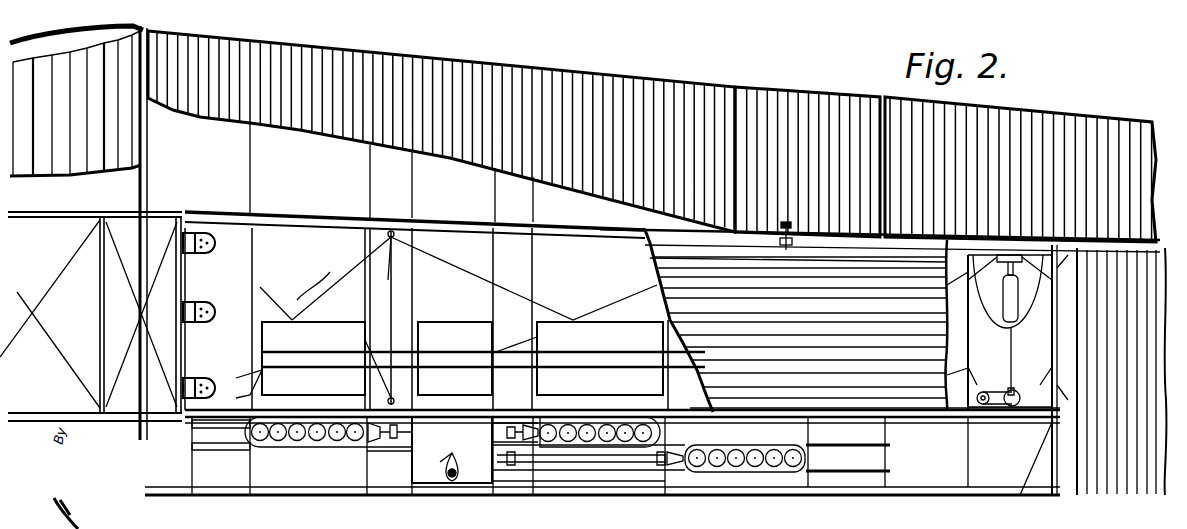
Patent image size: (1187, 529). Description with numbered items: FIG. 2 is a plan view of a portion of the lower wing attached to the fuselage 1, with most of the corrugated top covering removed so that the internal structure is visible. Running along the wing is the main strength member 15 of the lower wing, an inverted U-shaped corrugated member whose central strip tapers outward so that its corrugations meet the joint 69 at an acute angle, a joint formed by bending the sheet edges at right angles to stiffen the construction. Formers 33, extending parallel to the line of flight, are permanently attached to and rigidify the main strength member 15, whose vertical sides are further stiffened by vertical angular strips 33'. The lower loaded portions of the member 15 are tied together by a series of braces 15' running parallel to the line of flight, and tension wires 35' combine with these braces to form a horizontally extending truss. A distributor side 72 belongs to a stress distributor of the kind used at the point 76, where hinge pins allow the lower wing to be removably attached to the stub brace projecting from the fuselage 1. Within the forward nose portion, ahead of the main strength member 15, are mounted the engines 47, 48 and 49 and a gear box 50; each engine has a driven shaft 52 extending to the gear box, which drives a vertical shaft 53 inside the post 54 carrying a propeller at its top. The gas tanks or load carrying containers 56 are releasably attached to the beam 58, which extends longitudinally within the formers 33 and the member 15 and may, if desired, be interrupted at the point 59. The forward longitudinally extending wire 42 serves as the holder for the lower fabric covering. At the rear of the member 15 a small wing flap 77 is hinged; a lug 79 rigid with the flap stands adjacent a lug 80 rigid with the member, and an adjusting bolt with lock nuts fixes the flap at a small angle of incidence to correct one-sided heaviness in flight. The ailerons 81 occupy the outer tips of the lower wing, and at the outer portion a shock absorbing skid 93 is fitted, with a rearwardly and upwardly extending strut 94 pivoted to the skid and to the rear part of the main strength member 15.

The fuselage 1 is at (76, 101).
The wing flap 77 is at (815, 106).
The ailerons 81 is at (1143, 160).
The vertical angular strips 33' is at (672, 232).
The formers 33 is at (474, 317).
The tension wires 35' is at (318, 276).
The distributor side 72 is at (230, 302).
The braces 15' is at (363, 274).
The gas tank 56 is at (595, 331).
The beam 58 is at (345, 361).
The point of interruption 59 is at (256, 366).
The hinge point 76 is at (200, 378).
The joint 69 is at (652, 262).
The lug 79 is at (783, 236).
The lug 80 is at (790, 246).
The main strength member 15 is at (857, 325).
The strut 94 is at (1000, 285).
The skid 93 is at (1022, 292).
The forward longitudinally extending wire 42 is at (890, 470).
The gear box 50 is at (475, 443).
The engine 47 is at (317, 443).
The post 54 is at (447, 463).
The vertical shaft 53 is at (456, 482).
The driven shaft 52 is at (585, 458).
The engine 48 is at (613, 447).
The engine 49 is at (727, 470).